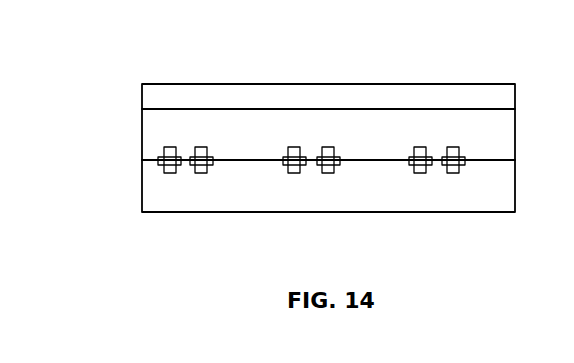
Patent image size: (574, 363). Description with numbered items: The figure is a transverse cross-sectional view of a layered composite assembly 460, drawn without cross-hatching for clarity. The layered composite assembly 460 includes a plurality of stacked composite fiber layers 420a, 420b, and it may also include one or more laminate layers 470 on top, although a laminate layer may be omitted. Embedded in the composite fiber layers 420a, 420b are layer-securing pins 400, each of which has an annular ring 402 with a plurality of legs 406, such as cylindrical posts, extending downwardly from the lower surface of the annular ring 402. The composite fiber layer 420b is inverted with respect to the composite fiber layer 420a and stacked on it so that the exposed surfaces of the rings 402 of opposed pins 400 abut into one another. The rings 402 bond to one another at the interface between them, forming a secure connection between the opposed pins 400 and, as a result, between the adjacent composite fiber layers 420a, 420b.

The layered composite assembly 460 is at (278, 150).
The laminate layer 470 is at (438, 109).
The composite fiber layer 420a is at (141, 204).
The composite fiber layer 420b is at (142, 155).
The layer-securing pin 400 is at (267, 162).
The annular ring 402 is at (158, 159).
The leg 406 is at (203, 147).